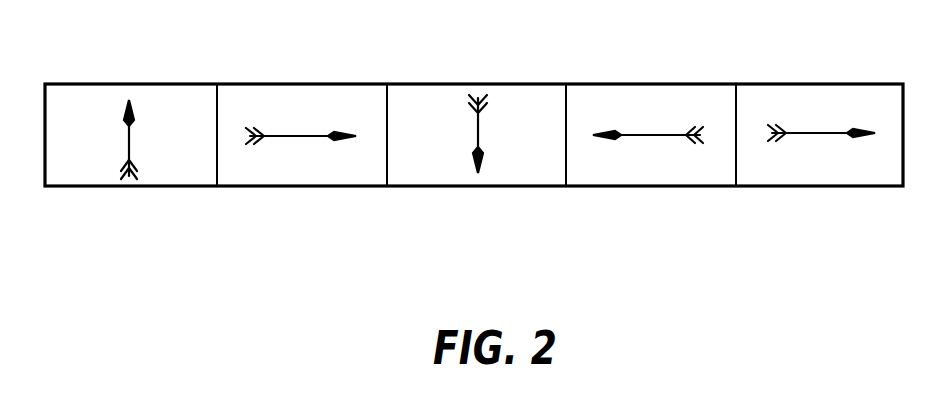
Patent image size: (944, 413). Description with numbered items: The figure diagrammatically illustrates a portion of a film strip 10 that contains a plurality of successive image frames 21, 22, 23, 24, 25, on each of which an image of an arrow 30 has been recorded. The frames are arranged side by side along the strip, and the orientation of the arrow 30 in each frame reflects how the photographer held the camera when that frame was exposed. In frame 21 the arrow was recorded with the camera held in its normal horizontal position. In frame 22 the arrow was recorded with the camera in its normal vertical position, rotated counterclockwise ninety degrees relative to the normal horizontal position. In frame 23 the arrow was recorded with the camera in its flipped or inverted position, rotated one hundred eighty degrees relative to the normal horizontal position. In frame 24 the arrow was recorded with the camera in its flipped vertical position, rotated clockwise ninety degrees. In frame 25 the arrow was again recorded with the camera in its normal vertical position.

The film strip 10 is at (182, 84).
The image frame 21 is at (80, 186).
The image frame 22 is at (274, 186).
The image frame 23 is at (461, 186).
The image frame 24 is at (622, 186).
The image frame 25 is at (800, 186).
The arrow 30 is at (131, 148).